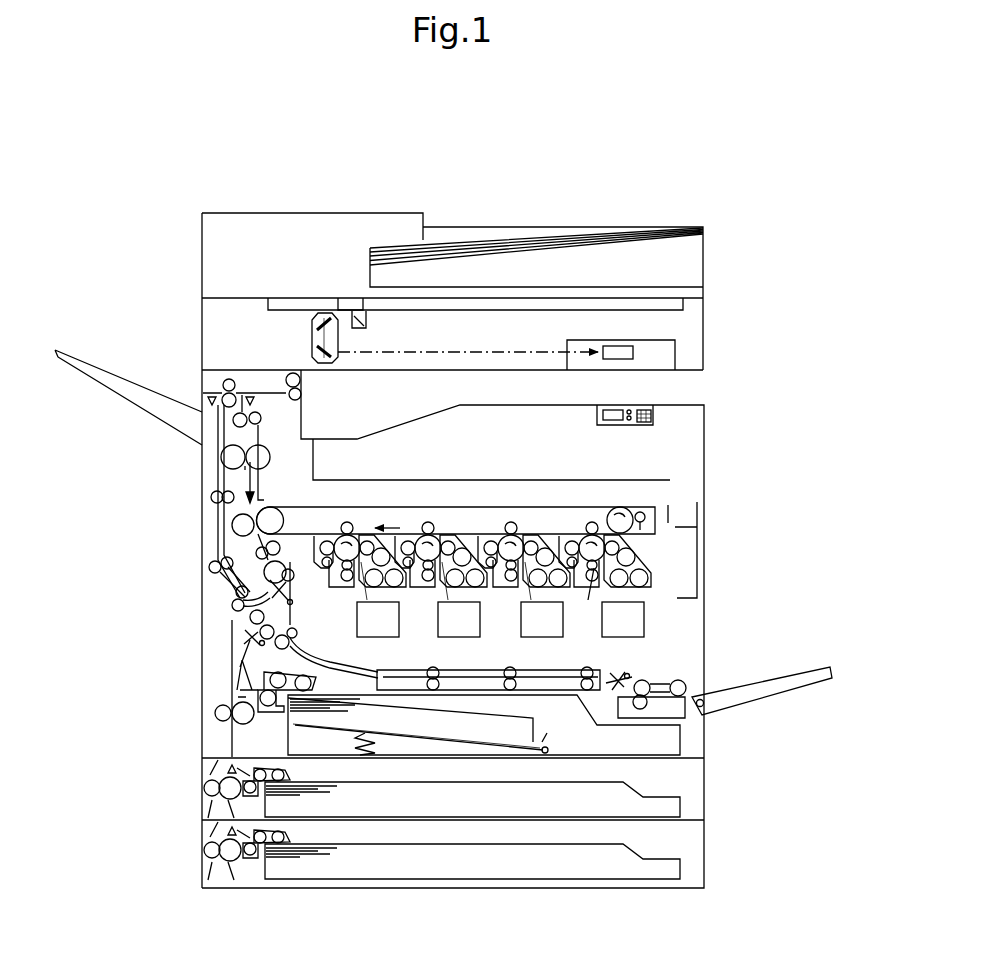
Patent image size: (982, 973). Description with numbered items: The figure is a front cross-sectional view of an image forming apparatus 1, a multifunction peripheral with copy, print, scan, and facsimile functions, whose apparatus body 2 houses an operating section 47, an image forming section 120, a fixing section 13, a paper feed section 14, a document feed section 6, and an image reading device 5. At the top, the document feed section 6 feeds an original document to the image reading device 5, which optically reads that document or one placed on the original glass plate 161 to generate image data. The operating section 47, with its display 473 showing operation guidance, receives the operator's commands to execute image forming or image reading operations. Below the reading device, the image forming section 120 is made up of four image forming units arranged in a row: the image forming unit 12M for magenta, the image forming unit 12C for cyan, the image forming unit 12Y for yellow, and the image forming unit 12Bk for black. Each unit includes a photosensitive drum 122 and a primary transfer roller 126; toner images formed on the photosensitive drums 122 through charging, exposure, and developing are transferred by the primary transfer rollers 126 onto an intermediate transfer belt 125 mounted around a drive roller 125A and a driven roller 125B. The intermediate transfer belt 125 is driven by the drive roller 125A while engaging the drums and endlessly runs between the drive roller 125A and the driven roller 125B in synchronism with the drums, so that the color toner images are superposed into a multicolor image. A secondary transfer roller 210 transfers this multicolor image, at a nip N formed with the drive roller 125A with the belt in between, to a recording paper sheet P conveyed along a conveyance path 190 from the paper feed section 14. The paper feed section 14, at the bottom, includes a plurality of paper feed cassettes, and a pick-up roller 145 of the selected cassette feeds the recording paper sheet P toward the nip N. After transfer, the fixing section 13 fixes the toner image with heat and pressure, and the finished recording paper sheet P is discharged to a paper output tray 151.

The image forming apparatus 1 is at (778, 280).
The apparatus body 2 is at (708, 427).
The image reading device 5 is at (407, 550).
The document feed section 6 is at (565, 212).
The original glass plate 161 is at (582, 305).
The operating section 47 is at (667, 412).
The display 473 is at (612, 415).
The paper output tray 151 is at (337, 435).
The image forming section 120 is at (668, 537).
The image forming unit for black 12Bk is at (350, 505).
The image forming unit for yellow 12Y is at (428, 505).
The image forming unit for cyan 12C is at (515, 505).
The image forming unit for magenta 12M is at (595, 505).
The photosensitive drum 122 is at (588, 600).
The intermediate transfer belt 125 is at (462, 492).
The drive roller 125A is at (272, 513).
The driven roller 125B is at (633, 512).
The primary transfer roller 126 is at (590, 527).
The fixing section 13 is at (222, 457).
The nip N is at (230, 477).
The paper feed section 14 is at (684, 780).
The pick-up roller 145 is at (273, 827).
The conveyance path 190 is at (218, 518).
The secondary transfer roller 210 is at (235, 533).
The recording paper sheet P is at (525, 712).